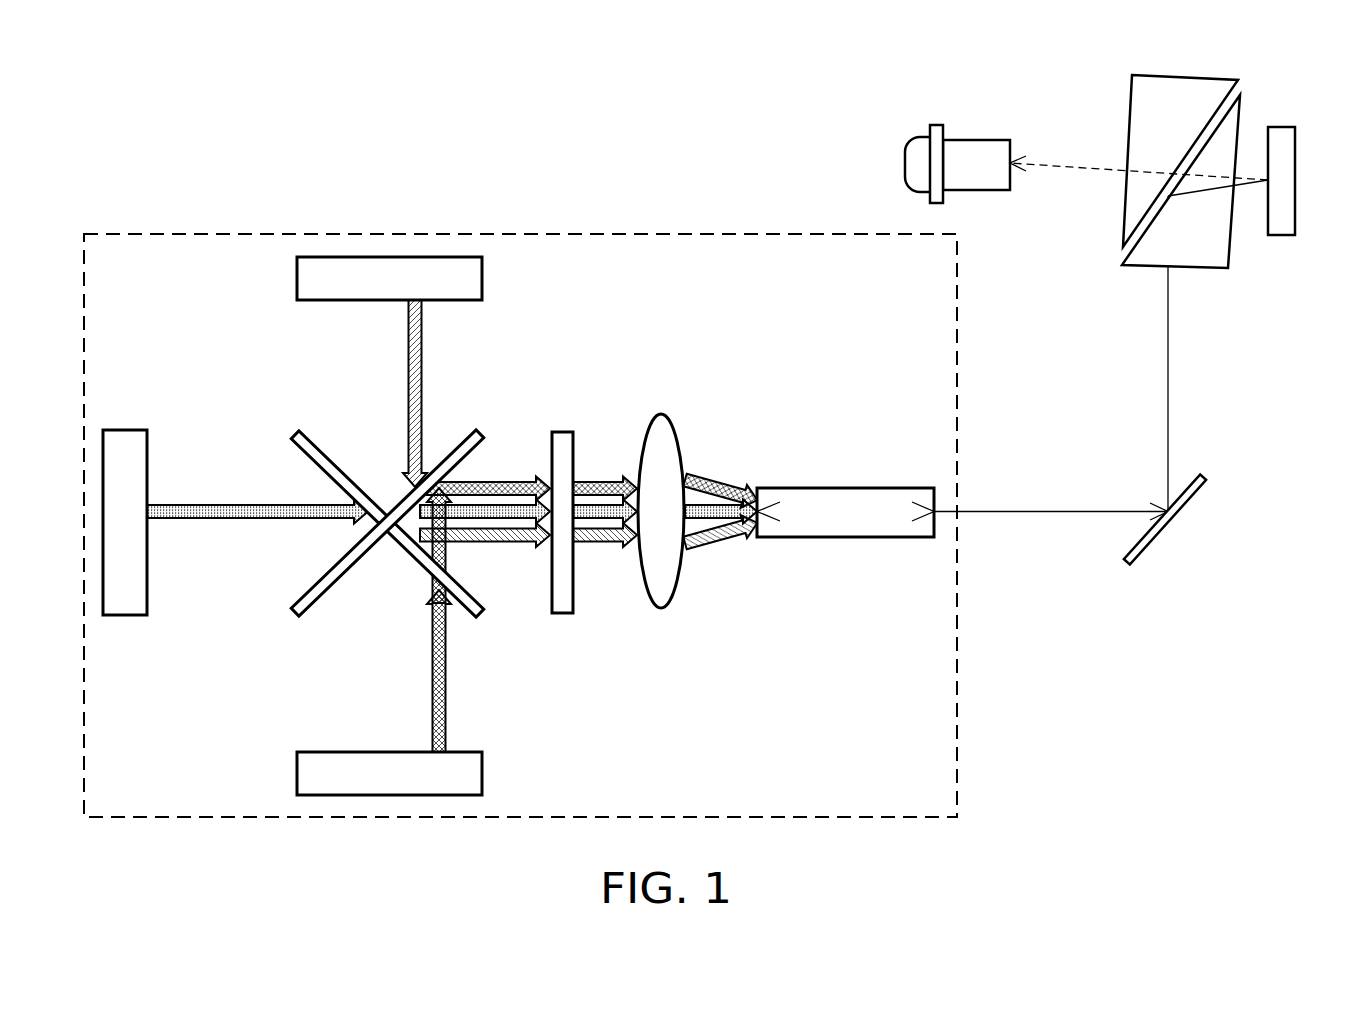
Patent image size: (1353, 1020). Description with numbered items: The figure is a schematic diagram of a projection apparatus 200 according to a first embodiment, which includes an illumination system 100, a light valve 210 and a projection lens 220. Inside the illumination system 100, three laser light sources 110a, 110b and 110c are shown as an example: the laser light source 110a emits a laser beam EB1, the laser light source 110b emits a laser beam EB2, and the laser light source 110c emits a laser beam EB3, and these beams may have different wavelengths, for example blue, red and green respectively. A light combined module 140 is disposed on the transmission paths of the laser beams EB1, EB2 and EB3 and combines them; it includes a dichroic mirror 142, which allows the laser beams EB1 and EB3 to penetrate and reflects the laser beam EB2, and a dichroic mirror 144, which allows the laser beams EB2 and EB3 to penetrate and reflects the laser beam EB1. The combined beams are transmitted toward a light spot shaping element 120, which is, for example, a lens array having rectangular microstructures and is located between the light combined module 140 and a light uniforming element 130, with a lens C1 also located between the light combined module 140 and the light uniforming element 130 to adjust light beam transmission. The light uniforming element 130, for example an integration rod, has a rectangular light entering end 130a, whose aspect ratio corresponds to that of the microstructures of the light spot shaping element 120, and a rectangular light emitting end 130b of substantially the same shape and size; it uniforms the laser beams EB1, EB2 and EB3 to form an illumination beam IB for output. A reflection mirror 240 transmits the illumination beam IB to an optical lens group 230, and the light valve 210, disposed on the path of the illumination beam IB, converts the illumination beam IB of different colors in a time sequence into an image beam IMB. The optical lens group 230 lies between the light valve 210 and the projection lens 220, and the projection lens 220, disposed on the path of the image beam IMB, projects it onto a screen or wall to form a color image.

The illumination system 100 is at (192, 232).
The laser light source 110a is at (483, 773).
The laser light source 110b is at (483, 278).
The laser light source 110c is at (123, 618).
The light spot shaping element 120 is at (560, 616).
The light uniforming element 130 is at (846, 553).
The rectangular light entering end 130a is at (788, 538).
The rectangular light emitting end 130b is at (905, 538).
The light combined module 140 is at (378, 583).
The dichroic mirror 142 is at (415, 560).
The dichroic mirror 144 is at (310, 612).
The projection apparatus 200 is at (1112, 379).
The light valve 210 is at (1283, 135).
The projection lens 220 is at (968, 145).
The optical lens group 230 is at (1237, 122).
The reflection mirror 240 is at (1172, 521).
The laser beam EB1 is at (446, 683).
The laser beam EB2 is at (422, 378).
The laser beam EB3 is at (213, 521).
The illumination beam IB is at (1048, 516).
The image beam IMB is at (1075, 170).
The lens C1 is at (661, 608).